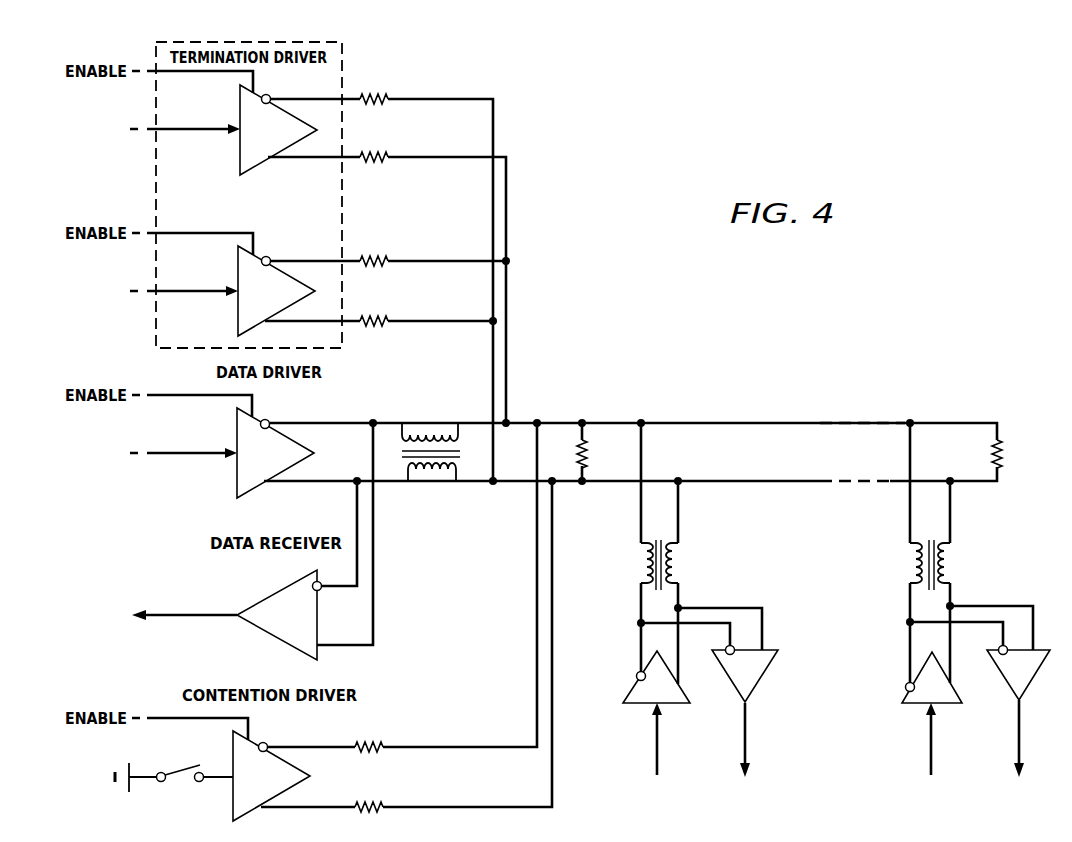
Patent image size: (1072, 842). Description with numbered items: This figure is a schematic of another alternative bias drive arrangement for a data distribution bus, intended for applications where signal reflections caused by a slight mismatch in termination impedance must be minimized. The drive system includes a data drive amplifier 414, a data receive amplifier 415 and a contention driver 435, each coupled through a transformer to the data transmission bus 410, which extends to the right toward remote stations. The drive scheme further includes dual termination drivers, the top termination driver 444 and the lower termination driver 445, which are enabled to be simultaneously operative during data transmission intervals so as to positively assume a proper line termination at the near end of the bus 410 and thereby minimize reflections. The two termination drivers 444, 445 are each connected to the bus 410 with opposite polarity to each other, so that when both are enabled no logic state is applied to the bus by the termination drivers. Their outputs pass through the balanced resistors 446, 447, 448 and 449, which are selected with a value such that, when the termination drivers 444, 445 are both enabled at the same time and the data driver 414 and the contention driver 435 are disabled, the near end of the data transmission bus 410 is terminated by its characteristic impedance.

The top termination driver 444 is at (246, 112).
The lower termination driver 445 is at (241, 273).
The balanced resistor 446 is at (381, 275).
The balanced resistor 447 is at (387, 276).
The balanced resistor 448 is at (390, 249).
The balanced resistor 449 is at (381, 309).
The data drive amplifier 414 is at (241, 435).
The data receive amplifier 415 is at (272, 598).
The contention driver 435 is at (236, 809).
The data transmission bus 410 is at (827, 463).